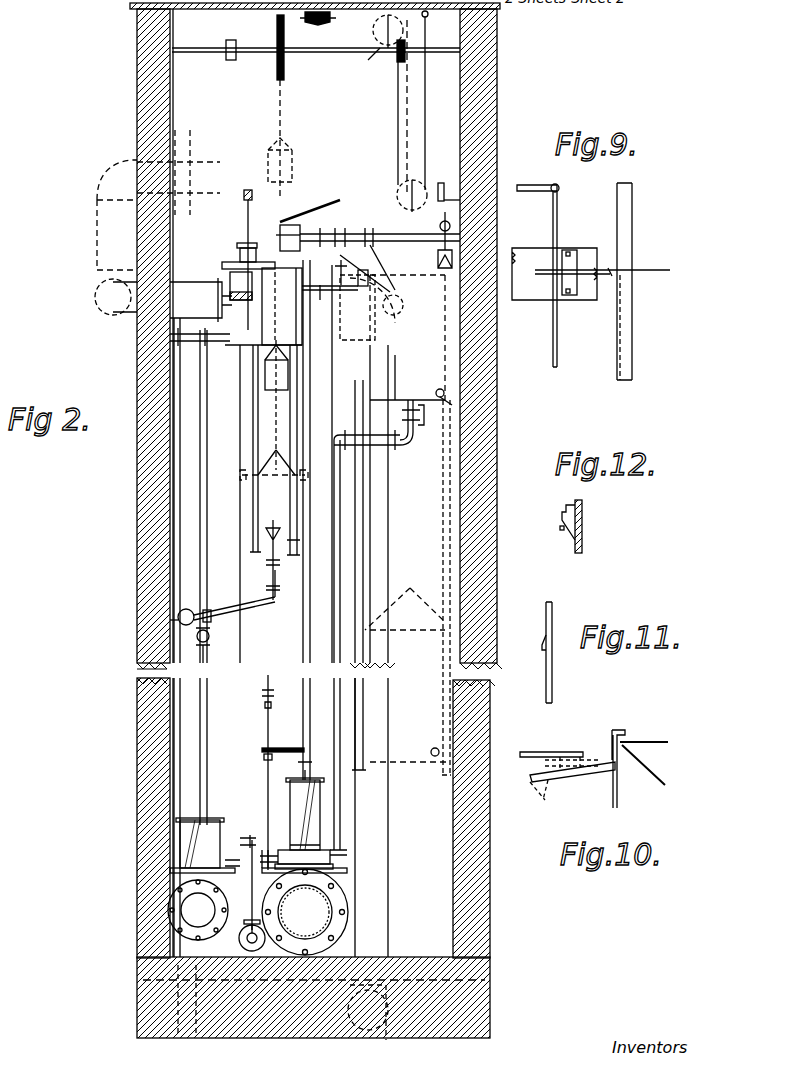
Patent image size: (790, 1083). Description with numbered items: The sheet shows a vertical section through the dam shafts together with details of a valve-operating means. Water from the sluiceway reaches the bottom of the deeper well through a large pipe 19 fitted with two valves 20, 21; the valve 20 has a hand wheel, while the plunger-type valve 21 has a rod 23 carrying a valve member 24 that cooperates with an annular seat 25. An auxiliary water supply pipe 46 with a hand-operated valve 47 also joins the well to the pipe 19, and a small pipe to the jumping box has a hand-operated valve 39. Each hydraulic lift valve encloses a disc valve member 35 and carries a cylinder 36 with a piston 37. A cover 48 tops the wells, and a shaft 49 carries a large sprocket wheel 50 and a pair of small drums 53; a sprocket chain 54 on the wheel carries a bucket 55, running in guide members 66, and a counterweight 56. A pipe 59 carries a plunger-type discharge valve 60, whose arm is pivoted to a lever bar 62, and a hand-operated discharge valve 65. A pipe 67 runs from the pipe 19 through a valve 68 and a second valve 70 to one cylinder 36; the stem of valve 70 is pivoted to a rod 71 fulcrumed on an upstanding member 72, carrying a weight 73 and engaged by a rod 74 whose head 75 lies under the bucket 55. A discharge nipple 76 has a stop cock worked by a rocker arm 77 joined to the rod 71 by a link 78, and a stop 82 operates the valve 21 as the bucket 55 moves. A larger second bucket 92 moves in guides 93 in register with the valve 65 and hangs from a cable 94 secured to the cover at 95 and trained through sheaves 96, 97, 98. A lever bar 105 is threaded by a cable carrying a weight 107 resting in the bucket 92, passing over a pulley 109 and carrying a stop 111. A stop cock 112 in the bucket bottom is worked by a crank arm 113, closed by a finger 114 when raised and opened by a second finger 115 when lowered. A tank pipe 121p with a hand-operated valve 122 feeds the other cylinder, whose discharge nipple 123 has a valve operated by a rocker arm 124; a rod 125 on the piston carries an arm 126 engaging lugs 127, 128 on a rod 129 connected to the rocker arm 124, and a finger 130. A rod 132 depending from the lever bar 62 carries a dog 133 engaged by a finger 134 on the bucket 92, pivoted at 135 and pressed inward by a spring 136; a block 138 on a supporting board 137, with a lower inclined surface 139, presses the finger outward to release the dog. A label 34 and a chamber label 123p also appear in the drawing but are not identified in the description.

In FIG. 2, the water delivery pipe 19 is at (383, 726).
In FIG. 2, the valve 20 is at (170, 160).
In FIG. 2, the valve 21 is at (240, 258).
In FIG. 2, the plunger or rod 23 is at (252, 215).
In FIG. 2, the valve member 24 is at (240, 297).
In FIG. 2, the annular seat 25 is at (232, 285).
In FIG. 2, the base plate 34 is at (340, 868).
In FIG. 2, the disc valve member 35 is at (318, 905).
In FIG. 2, the cylinder 36 is at (290, 800).
In FIG. 2, the piston 37 is at (312, 835).
In FIG. 2, the hand-operated valve 39 is at (246, 923).
In FIG. 2, the auxiliary water supply pipe 46 is at (174, 540).
In FIG. 2, the hand-operated valve 47 is at (170, 338).
In FIG. 2, the cover 48 is at (208, 9).
In FIG. 2, the shaft 49 is at (335, 53).
In FIG. 2, the large sprocket wheel 50 is at (284, 32).
In FIG. 2, the small drums 53 is at (234, 57).
In FIG. 2, the sprocket chain 54 is at (282, 118).
In FIG. 2, the bucket 55 is at (265, 366).
In FIG. 2, the counterweight 56 is at (272, 385).
In FIG. 2, the pipe 59 is at (400, 190).
In FIG. 2, the discharge valve 60 is at (280, 235).
In FIG. 2, the lever bar 62 is at (318, 208).
In FIG. 9, the lever bar 62 is at (548, 185).
In FIG. 2, the hand-operated discharge valve 65 is at (382, 285).
In FIG. 2, the guide members 66 is at (253, 535).
In FIG. 2, the pipe 67 is at (207, 518).
In FIG. 2, the valve 68 is at (240, 350).
In FIG. 2, the second valve 70 is at (208, 640).
In FIG. 2, the rod 71 is at (218, 611).
In FIG. 2, the upstanding member 72 is at (212, 618).
In FIG. 2, the weight 73 is at (192, 612).
In FIG. 2, the rod 74 is at (278, 580).
In FIG. 2, the head 75 is at (285, 520).
In FIG. 2, the discharge nipple 76 is at (250, 840).
In FIG. 2, the rocker arm 77 is at (265, 885).
In FIG. 2, the link 78 is at (240, 688).
In FIG. 2, the stop 82 is at (261, 483).
In FIG. 2, the second bucket 92 is at (397, 337).
In FIG. 10, the second bucket 92 is at (652, 738).
In FIG. 2, the guides 93 is at (370, 600).
In FIG. 9, the guides 93 is at (633, 322).
In FIG. 10, the guides 93 is at (617, 728).
In FIG. 2, the cable 94 is at (425, 130).
In FIG. 2, the cable securing point 95 is at (428, 15).
In FIG. 2, the sheave 96 is at (438, 180).
In FIG. 2, the sheave 97 is at (368, 60).
In FIG. 2, the sheave 98 is at (322, 24).
In FIG. 2, the lever bar 105 is at (345, 225).
In FIG. 2, the weight 107 is at (452, 258).
In FIG. 2, the pulley 109 is at (480, 150).
In FIG. 2, the stop 111 is at (470, 214).
In FIG. 2, the stop cock 112 is at (437, 400).
In FIG. 2, the crank arm 113 is at (445, 395).
In FIG. 2, the finger 114 is at (490, 360).
In FIG. 2, the second finger 115 is at (431, 752).
In FIG. 2, the pipe 121p is at (340, 545).
In FIG. 2, the hand-operated valve 122 is at (400, 412).
In FIG. 2, the discharge nipple 123 is at (282, 852).
In FIG. 2, the pump chamber 123p is at (278, 880).
In FIG. 2, the rocker arm 124 is at (268, 850).
In FIG. 2, the rod 125 is at (313, 713).
In FIG. 2, the arm 126 is at (280, 748).
In FIG. 2, the lug 127 is at (282, 685).
In FIG. 2, the lug 128 is at (264, 758).
In FIG. 2, the rod 129 is at (268, 718).
In FIG. 2, the finger 130 is at (335, 530).
In FIG. 2, the rod 132 is at (332, 370).
In FIG. 9, the rod 132 is at (557, 345).
In FIG. 11, the rod 132 is at (553, 615).
In FIG. 2, the dog 133 is at (322, 290).
In FIG. 11, the dog 133 is at (542, 644).
In FIG. 9, the finger 134 is at (588, 300).
In FIG. 10, the finger 134 is at (548, 790).
In FIG. 10, the pivot 135 is at (598, 762).
In FIG. 10, the spring 136 is at (598, 770).
In FIG. 12, the supporting board 137 is at (583, 525).
In FIG. 2, the block 138 is at (343, 271).
In FIG. 9, the block 138 is at (572, 255).
In FIG. 12, the block 138 is at (568, 522).
In FIG. 12, the lower inclined surface 139 is at (566, 530).